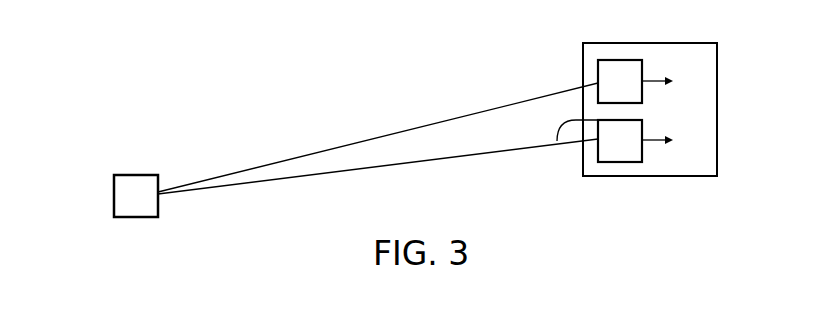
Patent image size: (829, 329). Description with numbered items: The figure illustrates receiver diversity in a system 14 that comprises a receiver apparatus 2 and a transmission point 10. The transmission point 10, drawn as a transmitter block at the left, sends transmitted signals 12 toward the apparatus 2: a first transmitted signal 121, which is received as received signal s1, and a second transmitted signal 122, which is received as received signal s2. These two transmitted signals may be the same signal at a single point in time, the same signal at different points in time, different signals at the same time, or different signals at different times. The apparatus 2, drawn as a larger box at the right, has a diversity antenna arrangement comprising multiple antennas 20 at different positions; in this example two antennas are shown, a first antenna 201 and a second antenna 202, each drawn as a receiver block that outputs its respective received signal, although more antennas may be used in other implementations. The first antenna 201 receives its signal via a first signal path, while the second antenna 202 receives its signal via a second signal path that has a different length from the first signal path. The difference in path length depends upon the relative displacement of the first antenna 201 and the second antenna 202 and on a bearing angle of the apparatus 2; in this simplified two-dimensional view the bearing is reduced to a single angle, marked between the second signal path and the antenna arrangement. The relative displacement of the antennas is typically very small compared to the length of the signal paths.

The transmission point 10 is at (113, 198).
The transmitted signals 12 is at (378, 160).
The first transmitted signal 121 is at (330, 150).
The second transmitted signal 122 is at (342, 175).
The system 14 is at (179, 129).
The apparatus 2 is at (652, 119).
The antennas 20 is at (640, 119).
The first antenna 201 is at (622, 60).
The second antenna 202 is at (615, 162).